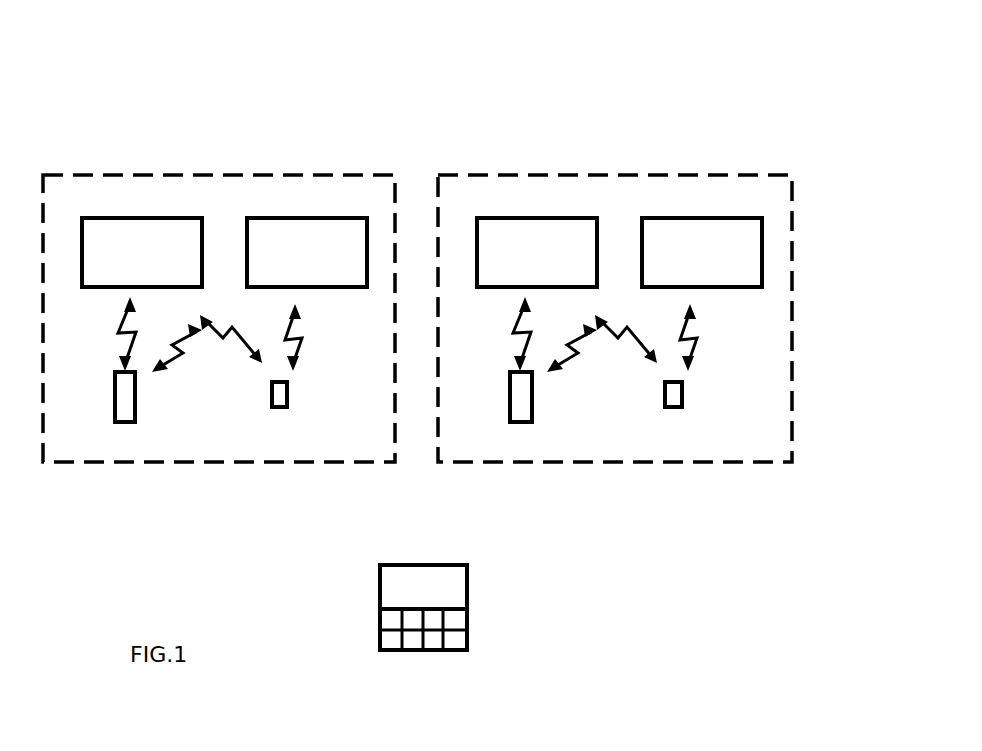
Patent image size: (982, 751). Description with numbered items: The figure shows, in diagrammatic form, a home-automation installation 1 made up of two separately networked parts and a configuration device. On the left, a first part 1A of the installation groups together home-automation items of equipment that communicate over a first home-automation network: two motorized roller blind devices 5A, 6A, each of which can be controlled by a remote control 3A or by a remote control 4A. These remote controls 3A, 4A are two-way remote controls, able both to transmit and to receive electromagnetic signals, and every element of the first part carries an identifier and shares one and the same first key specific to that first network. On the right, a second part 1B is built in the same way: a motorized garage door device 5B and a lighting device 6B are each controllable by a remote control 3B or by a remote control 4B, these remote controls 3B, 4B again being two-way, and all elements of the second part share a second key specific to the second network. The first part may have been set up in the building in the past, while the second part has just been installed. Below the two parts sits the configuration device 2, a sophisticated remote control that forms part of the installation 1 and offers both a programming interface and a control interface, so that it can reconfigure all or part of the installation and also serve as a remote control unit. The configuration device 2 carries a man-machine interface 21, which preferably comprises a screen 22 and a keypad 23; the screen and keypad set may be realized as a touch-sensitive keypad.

The home-automation installation 1 is at (760, 142).
The first part of the home-automation installation 1A is at (189, 470).
The second part of the home-automation installation 1B is at (652, 470).
The configuration device 2 is at (435, 647).
The man-machine interface 21 is at (380, 595).
The screen 22 is at (445, 583).
The keypad 23 is at (450, 638).
The remote control 3A is at (115, 408).
The remote control 4A is at (287, 392).
The motorized roller blind device 5A is at (125, 218).
The motorized roller blind device 6A is at (288, 218).
The remote control 3B is at (510, 408).
The remote control 4B is at (682, 392).
The motorized garage door device 5B is at (520, 218).
The lighting device 6B is at (683, 218).